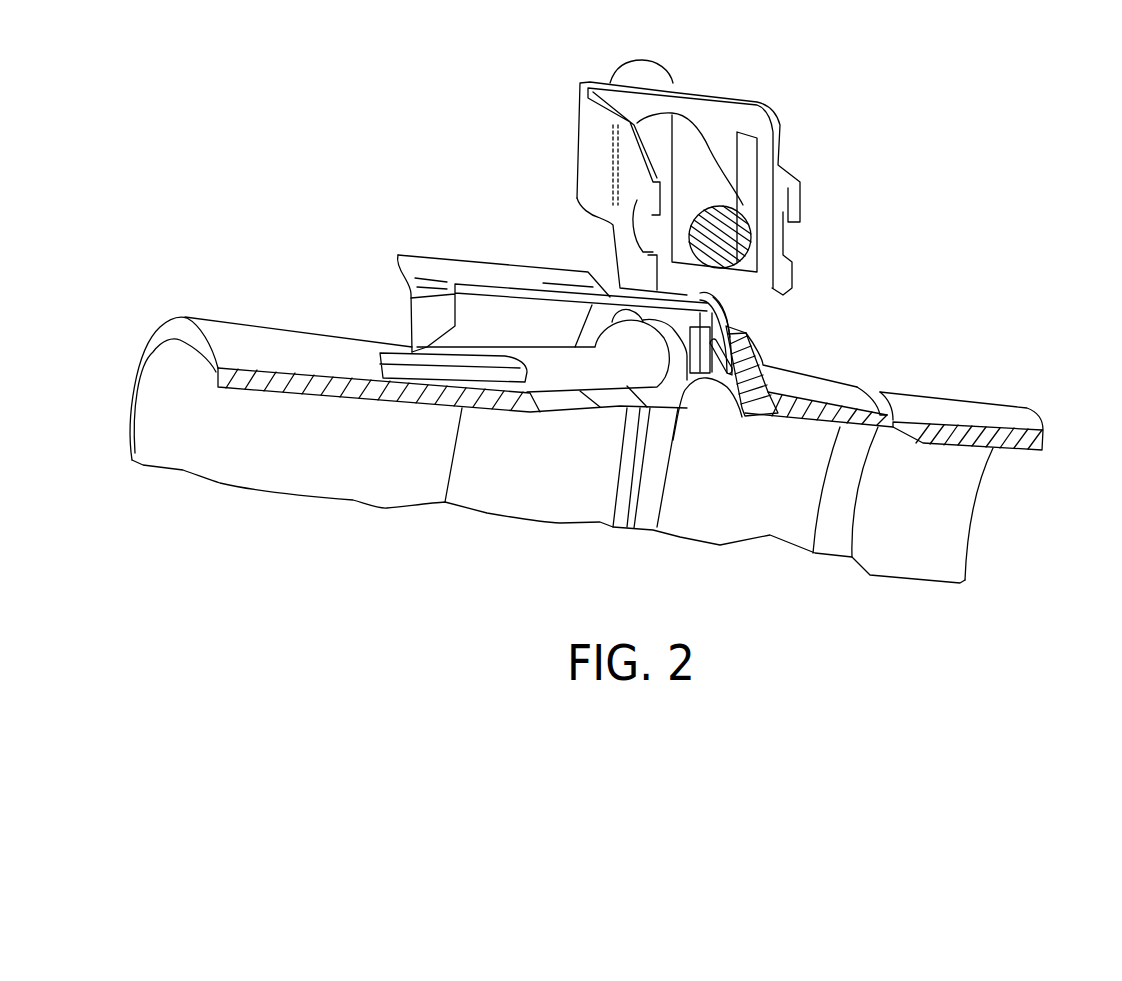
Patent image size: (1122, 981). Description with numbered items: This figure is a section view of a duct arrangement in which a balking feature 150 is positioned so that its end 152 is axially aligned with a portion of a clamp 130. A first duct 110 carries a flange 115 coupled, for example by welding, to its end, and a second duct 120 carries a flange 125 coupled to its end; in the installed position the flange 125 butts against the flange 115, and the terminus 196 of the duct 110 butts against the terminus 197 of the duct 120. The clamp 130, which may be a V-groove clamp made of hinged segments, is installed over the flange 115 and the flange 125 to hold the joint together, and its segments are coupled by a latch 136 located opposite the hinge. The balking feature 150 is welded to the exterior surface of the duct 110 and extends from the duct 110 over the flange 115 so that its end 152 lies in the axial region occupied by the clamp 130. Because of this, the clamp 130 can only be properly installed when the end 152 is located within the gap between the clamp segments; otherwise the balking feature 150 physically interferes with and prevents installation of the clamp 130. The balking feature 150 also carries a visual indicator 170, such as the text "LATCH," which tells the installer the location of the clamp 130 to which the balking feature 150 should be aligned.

The duct 110 is at (214, 326).
The flange 115 is at (553, 363).
The duct 120 is at (963, 398).
The flange 125 is at (827, 387).
The clamp 130 is at (767, 177).
The latch 136 is at (787, 128).
The balking feature 150 is at (413, 257).
The end 152 is at (705, 385).
The visual indicator 170 is at (457, 242).
The terminus 196 is at (740, 300).
The terminus 197 is at (740, 330).